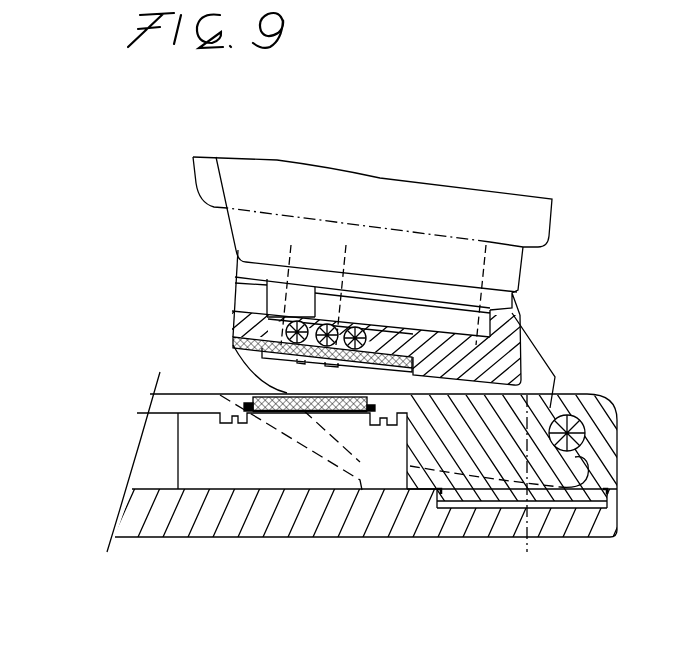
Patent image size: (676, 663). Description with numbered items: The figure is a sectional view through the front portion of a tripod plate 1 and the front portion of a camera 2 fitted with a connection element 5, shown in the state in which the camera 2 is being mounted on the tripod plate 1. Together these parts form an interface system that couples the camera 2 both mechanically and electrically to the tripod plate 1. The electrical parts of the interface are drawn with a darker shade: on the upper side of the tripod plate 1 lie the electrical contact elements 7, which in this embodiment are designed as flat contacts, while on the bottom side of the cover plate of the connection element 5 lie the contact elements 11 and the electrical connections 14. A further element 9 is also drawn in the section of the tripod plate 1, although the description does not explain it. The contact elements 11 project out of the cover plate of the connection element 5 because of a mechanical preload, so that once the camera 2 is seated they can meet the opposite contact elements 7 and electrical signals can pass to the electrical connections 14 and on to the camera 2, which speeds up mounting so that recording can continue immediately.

The tripod plate 1 is at (282, 528).
The camera 2 is at (538, 220).
The connection element 5 is at (537, 373).
The electrical contact elements 7 is at (287, 393).
The pivot pin 9 is at (583, 426).
The contact elements 11 is at (237, 346).
The electrical connections 14 is at (292, 318).